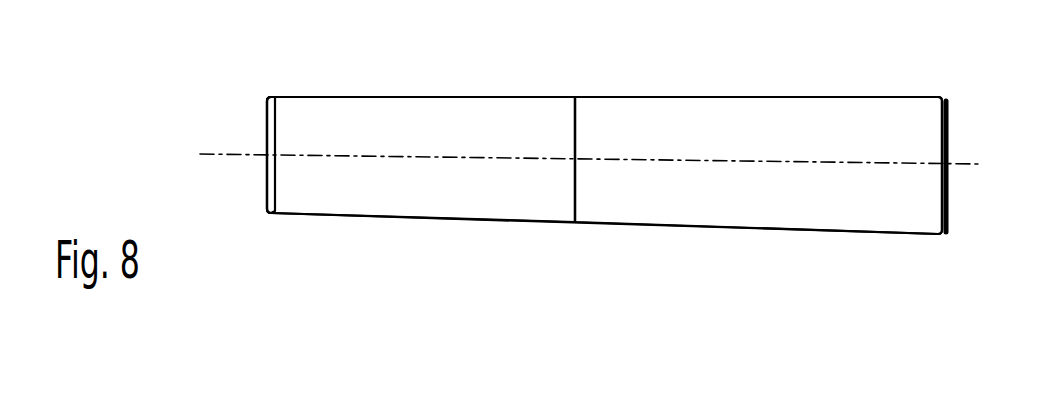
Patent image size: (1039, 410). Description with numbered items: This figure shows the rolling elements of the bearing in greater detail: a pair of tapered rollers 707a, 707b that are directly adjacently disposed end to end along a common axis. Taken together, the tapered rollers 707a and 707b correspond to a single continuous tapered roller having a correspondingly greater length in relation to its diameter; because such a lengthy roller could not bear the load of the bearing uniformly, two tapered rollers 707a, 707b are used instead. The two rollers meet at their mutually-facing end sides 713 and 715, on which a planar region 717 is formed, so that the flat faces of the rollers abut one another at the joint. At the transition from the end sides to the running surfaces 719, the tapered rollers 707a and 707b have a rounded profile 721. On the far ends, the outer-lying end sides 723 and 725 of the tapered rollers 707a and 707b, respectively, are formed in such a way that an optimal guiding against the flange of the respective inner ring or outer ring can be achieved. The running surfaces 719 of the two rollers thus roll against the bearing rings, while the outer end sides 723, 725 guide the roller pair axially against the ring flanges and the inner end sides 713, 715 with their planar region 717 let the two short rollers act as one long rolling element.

The tapered roller 707a is at (785, 148).
The tapered roller 707b is at (443, 147).
The rounded profile 721 is at (575, 97).
The running surfaces 719 is at (378, 97).
The outer-lying end side 725 is at (263, 136).
The outer-lying end side 723 is at (957, 128).
The planar region 717 is at (573, 130).
The mutually-facing end side 715 is at (581, 176).
The mutually-facing end side 713 is at (575, 180).